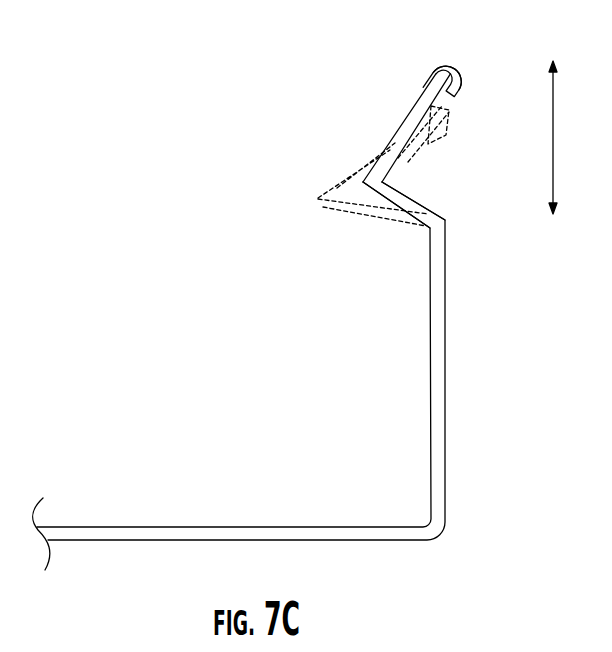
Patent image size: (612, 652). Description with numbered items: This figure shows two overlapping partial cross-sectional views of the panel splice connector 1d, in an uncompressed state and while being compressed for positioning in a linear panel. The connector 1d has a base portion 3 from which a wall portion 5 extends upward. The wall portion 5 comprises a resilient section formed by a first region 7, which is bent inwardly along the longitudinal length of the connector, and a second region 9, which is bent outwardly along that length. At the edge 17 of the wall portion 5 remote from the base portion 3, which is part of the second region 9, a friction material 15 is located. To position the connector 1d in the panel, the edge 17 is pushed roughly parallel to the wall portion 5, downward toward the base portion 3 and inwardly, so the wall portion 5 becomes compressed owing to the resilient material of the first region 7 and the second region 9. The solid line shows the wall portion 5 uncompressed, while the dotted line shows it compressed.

The connector 1d is at (289, 463).
The base portion 3 is at (314, 538).
The wall portion 5 is at (446, 326).
The first region 7 is at (402, 193).
The second region 9 is at (396, 140).
The friction material 15 is at (437, 62).
The edge 17 is at (461, 75).